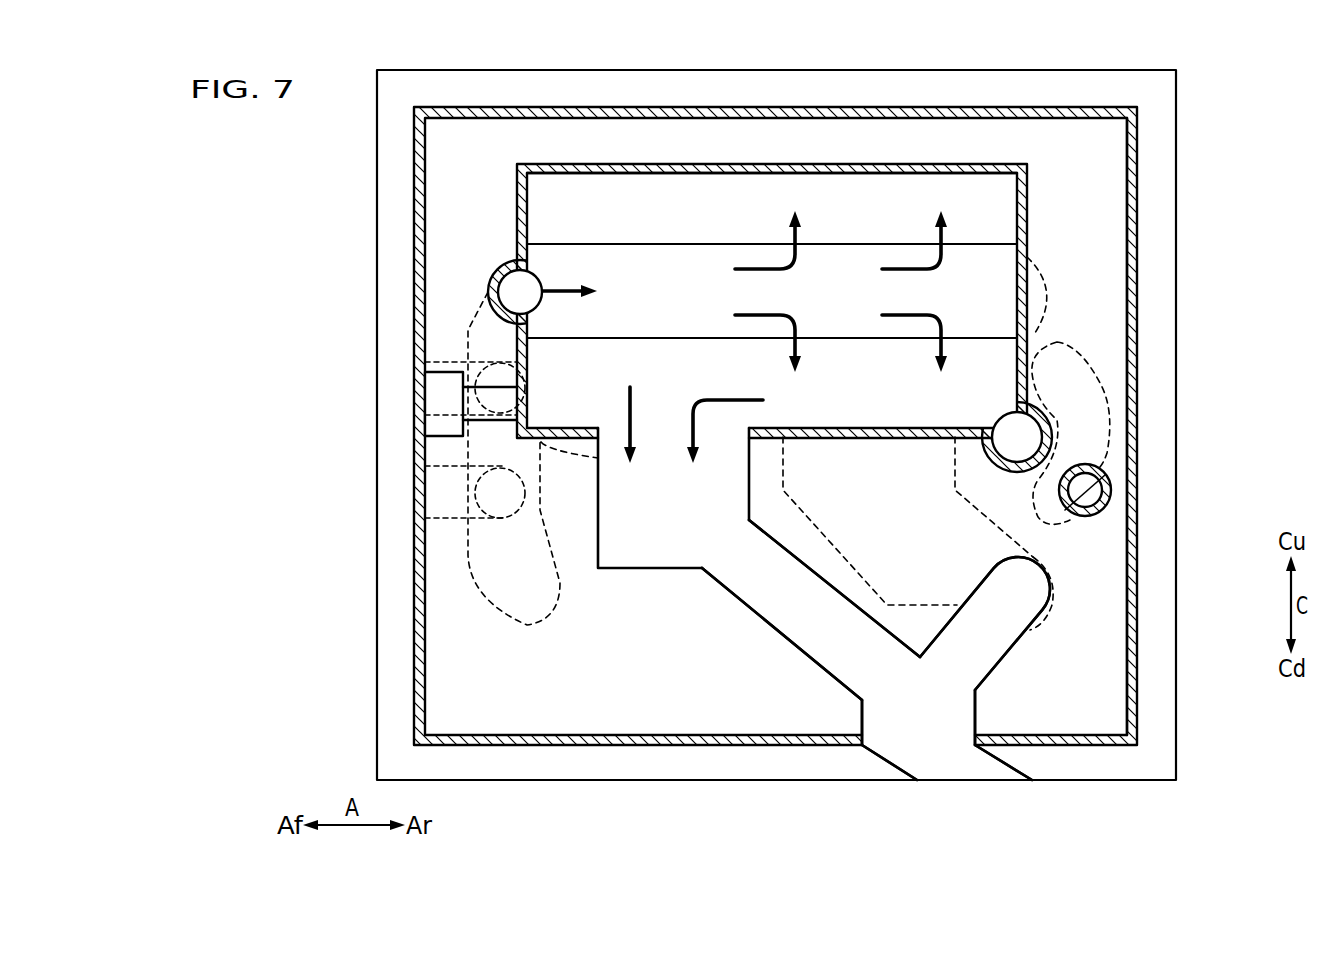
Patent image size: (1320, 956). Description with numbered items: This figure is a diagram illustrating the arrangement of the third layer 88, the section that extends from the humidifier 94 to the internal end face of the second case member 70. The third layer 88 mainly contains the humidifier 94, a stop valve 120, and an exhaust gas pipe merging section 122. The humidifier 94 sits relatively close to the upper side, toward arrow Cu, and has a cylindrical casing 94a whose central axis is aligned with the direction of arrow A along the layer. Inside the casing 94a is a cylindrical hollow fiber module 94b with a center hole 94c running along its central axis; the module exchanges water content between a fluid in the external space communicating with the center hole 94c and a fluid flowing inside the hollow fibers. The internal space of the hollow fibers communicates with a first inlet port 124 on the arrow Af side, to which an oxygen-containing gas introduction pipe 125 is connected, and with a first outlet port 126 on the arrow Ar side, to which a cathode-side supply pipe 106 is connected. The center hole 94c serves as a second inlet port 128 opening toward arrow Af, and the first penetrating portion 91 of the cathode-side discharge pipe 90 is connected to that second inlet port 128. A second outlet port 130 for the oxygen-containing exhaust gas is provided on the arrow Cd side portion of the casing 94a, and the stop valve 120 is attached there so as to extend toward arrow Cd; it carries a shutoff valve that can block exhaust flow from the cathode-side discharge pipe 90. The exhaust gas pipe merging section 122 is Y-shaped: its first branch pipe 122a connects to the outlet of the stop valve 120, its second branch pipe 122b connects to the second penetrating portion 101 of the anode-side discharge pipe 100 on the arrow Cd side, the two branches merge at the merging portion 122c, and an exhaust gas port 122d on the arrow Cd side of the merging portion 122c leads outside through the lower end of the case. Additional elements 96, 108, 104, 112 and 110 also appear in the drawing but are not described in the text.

The second case member 70 is at (848, 105).
The third layer 88 is at (1091, 157).
The humidifier 94 is at (635, 163).
The cylindrical casing 94a is at (737, 163).
The hollow fiber module 94b is at (848, 197).
The center hole 94c is at (699, 284).
The first penetrating portion 91 is at (500, 262).
The second inlet port 128 is at (527, 275).
The oxygen-containing gas introduction pipe 125 is at (435, 404).
The first inlet port 124 is at (528, 409).
The pipe (96b) 96 is at (445, 362).
The stop valve 120 is at (637, 568).
The second outlet port 130 is at (745, 440).
The cathode-side discharge pipe 90 is at (552, 538).
The exhaust gas pipe merging section 122 is at (812, 660).
The first branch pipe 122a is at (712, 555).
The second branch pipe 122b is at (1018, 592).
The merging portion 122c is at (927, 690).
The exhaust gas port 122d is at (973, 763).
The passage region 108 is at (830, 545).
The second penetrating portion 101 is at (1055, 593).
The first outlet port 126 is at (1015, 445).
The cathode-side supply pipe 106 is at (1022, 422).
The anode-side discharge pipe 100 is at (1040, 255).
The hidden passage 104 is at (1057, 342).
The pipe 112 is at (1112, 491).
The side wall 110 is at (1112, 416).